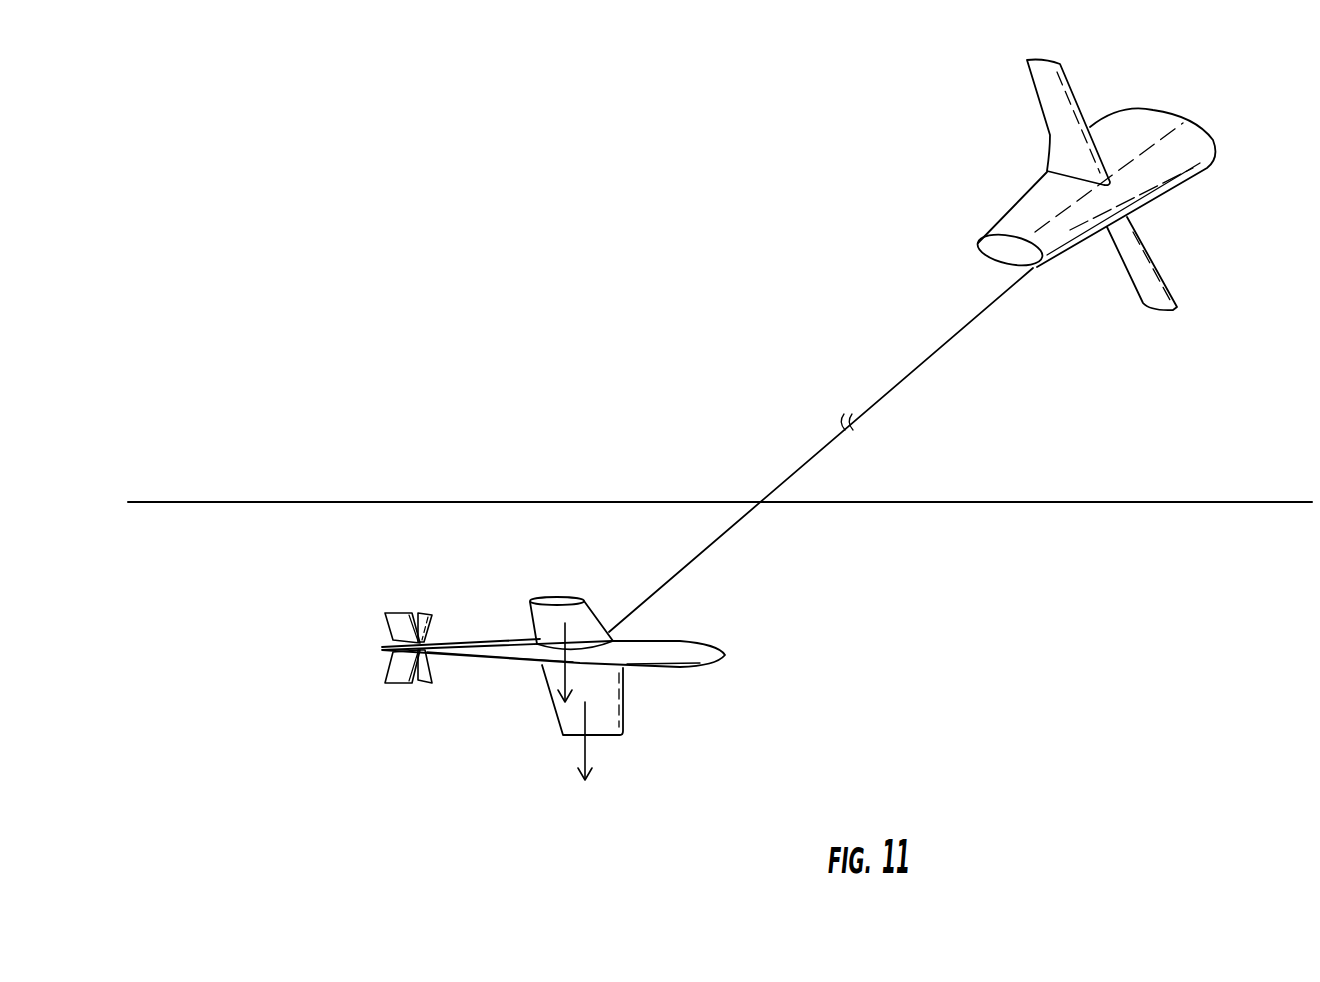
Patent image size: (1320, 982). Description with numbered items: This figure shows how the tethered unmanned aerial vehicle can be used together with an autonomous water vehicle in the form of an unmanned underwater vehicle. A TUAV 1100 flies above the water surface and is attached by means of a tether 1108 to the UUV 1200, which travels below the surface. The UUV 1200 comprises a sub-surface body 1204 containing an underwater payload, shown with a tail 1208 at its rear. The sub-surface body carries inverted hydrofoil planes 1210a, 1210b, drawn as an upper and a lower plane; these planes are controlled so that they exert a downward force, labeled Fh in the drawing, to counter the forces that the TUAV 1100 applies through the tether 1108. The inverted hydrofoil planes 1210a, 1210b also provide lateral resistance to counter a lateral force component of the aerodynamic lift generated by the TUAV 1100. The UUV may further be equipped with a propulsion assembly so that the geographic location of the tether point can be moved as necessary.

The TUAV 1100 is at (958, 195).
The tether 1108 is at (917, 367).
The UUV 1200 is at (345, 613).
The hull 1204 is at (668, 643).
The tail fins 1208 is at (395, 672).
The inverted hydrofoil plane 1210a is at (550, 602).
The inverted hydrofoil plane 1210b is at (615, 715).